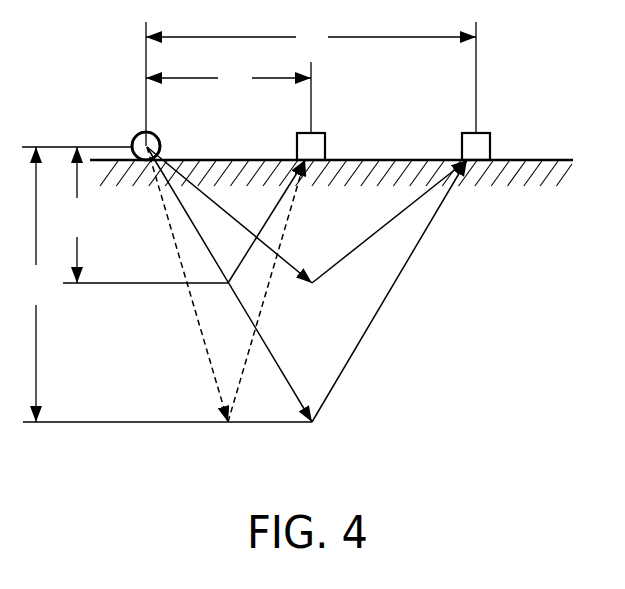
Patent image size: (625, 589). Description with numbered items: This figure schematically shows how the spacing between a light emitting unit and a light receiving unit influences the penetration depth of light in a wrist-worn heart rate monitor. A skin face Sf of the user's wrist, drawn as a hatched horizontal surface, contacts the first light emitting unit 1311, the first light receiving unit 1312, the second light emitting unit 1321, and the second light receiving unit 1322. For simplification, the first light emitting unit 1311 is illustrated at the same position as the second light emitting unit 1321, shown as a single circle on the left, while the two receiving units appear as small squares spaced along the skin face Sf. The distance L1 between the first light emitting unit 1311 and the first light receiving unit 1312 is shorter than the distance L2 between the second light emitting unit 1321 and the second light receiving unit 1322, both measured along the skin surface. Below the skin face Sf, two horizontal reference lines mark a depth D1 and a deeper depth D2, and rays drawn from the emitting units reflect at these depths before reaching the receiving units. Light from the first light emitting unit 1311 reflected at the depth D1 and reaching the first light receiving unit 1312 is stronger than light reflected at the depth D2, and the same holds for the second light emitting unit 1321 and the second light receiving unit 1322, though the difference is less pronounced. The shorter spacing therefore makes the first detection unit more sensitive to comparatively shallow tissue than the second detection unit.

The first light emitting unit 1311 is at (133, 137).
The second light emitting unit 1321 is at (106, 123).
The first light receiving unit 1312 is at (323, 133).
The second light receiving unit 1322 is at (481, 133).
The skin face Sf is at (556, 160).
The distance between first light emitting unit and first light receiving unit L1 is at (228, 97).
The distance between second light emitting unit and second light receiving unit L2 is at (311, 84).
The depth D1 is at (125, 215).
The depth D2 is at (166, 284).